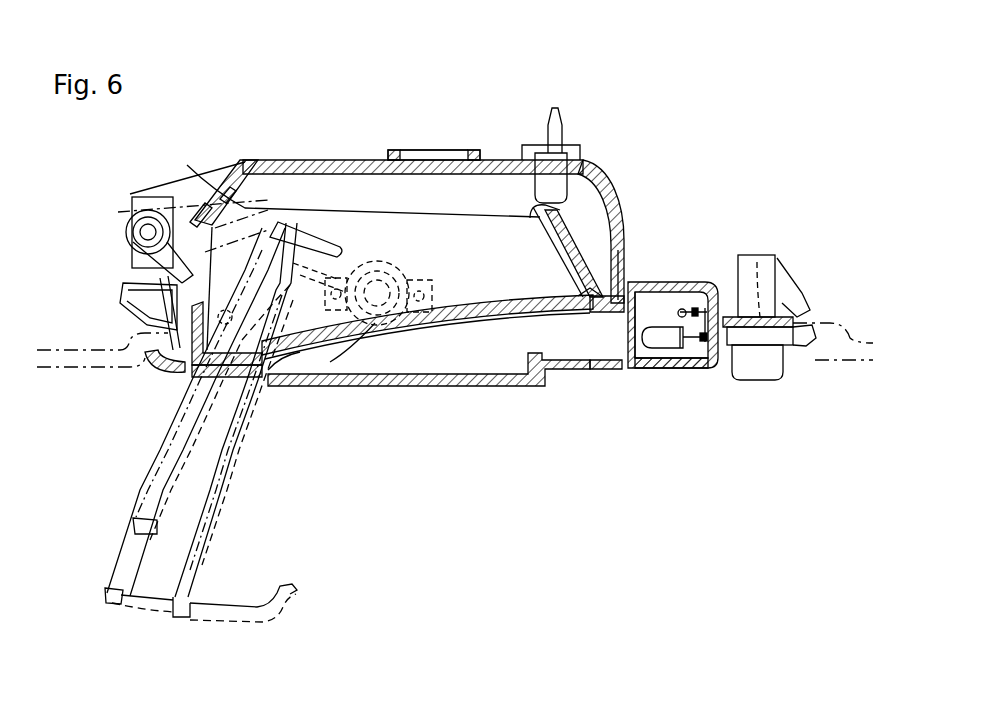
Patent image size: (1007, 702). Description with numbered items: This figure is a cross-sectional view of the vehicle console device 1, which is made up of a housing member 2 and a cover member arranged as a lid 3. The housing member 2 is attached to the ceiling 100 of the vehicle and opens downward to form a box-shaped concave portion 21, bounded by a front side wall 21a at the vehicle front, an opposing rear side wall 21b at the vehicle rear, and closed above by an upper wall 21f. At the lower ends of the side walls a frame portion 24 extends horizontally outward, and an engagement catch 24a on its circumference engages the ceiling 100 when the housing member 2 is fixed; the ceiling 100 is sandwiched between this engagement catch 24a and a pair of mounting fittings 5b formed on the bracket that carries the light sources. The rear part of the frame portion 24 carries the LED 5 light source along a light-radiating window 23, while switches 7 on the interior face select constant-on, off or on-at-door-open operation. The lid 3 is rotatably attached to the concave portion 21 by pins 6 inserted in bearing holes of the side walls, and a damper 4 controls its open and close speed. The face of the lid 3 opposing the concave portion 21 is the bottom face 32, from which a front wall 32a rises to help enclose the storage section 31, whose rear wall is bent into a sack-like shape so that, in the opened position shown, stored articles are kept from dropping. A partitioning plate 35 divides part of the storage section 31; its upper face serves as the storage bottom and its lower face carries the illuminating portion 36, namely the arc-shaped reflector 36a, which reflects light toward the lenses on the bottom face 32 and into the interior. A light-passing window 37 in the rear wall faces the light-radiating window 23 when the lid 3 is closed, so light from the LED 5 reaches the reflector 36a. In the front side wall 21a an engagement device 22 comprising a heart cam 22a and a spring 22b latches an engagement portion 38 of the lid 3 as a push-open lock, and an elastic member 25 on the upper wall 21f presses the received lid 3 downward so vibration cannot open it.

The vehicle console device 1 is at (708, 118).
The housing member 2 is at (402, 150).
The lid 3 is at (543, 382).
The damper 4 is at (358, 332).
The LED 5 is at (665, 348).
The mounting fittings 5b is at (800, 292).
The pin 6 is at (293, 380).
The switches 7 is at (758, 348).
The concave portion 21 is at (586, 176).
The front side wall 21a is at (211, 186).
The rear side wall 21b is at (629, 233).
The upper wall 21f is at (333, 160).
The engagement device 22 is at (52, 198).
The heart cam 22a is at (176, 207).
The spring 22b is at (147, 270).
The light-radiating window 23 is at (638, 322).
The frame portion 24 is at (700, 369).
The engagement catch 24a is at (150, 372).
The elastic member 25 is at (567, 185).
The storage section 31 is at (548, 260).
The bottom face 32 is at (541, 364).
The front wall 32a is at (266, 162).
The partitioning plate 35 is at (473, 312).
The bottom wall 36 is at (506, 386).
The reflector 36a is at (376, 325).
The light-passing window 37 is at (593, 302).
The engagement portion 38 is at (210, 213).
The ceiling 100 is at (847, 363).